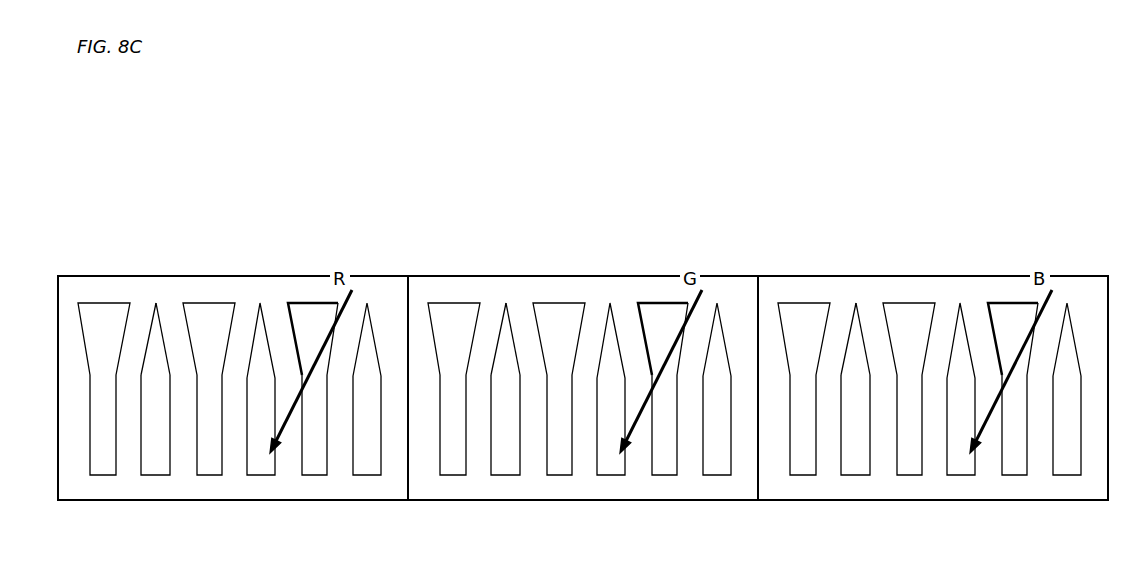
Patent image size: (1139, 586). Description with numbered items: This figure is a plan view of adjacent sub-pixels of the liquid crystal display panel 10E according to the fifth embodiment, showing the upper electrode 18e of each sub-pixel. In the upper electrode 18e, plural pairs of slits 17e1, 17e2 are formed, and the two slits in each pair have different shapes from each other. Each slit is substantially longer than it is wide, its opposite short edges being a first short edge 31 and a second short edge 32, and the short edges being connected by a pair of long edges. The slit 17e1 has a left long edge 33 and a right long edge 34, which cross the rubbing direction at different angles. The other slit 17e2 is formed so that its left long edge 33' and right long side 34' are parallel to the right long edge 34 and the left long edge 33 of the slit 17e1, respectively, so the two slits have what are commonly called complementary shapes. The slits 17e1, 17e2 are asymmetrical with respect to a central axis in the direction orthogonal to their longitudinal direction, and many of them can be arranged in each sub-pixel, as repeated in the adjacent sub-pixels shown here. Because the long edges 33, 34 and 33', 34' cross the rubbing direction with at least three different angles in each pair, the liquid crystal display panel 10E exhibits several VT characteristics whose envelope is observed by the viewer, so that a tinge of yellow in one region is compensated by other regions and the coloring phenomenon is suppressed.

The liquid crystal display panel 10E is at (110, 235).
The first short edge 31 is at (200, 302).
The second short edge 32 is at (313, 476).
The left long edge 33 is at (652, 423).
The right long edge 34 is at (698, 423).
The left long edge 33' is at (477, 423).
The right long side 34' is at (546, 423).
The upper electrode 18e is at (253, 296).
The slit 17e1 is at (317, 321).
The slit 17e2 is at (375, 341).